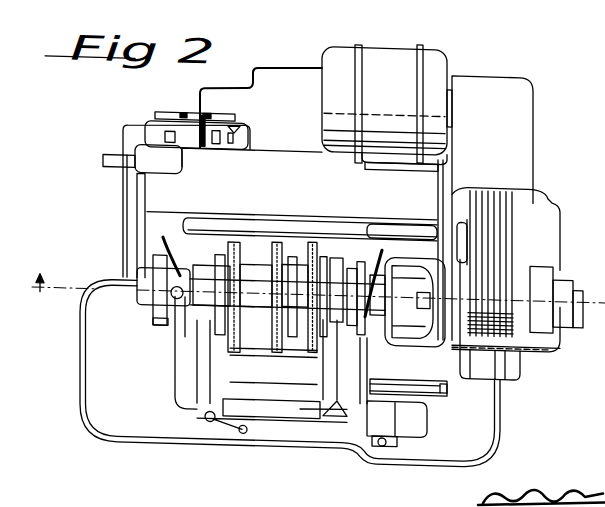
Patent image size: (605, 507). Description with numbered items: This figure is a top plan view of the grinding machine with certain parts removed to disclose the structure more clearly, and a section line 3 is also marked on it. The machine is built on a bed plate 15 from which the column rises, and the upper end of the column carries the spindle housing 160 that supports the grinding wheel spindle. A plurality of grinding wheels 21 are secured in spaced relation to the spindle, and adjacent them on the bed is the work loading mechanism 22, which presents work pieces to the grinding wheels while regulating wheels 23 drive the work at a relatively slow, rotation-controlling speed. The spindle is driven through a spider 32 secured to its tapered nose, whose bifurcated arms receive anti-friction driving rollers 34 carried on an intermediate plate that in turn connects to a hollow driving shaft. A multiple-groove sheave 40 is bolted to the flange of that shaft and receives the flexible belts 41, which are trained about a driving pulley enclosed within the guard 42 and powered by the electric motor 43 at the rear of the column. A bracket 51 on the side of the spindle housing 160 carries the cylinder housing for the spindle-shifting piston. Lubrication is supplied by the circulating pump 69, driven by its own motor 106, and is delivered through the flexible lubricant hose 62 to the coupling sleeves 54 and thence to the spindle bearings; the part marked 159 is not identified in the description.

The section line 3- 3 is at (45, 272).
The bed plate 15 is at (123, 234).
The grinding wheels 21 is at (313, 242).
The work loading mechanism 22 is at (285, 409).
The regulating wheels 23 is at (298, 354).
The spider 32 is at (408, 284).
The anti-friction driving rollers 34 is at (437, 218).
The sheave 40 is at (535, 348).
The flexible belts 41 is at (560, 213).
The guard 42 is at (527, 140).
The electric motor 43 is at (400, 39).
The bracket 51 is at (563, 263).
The coupling sleeves 54 is at (170, 341).
The flexible lubricant hose 62 is at (378, 249).
The lubricant circulating pump 69 is at (170, 134).
The motor 106 is at (238, 132).
The solenoid 159 is at (370, 355).
The spindle housing 160 is at (142, 260).